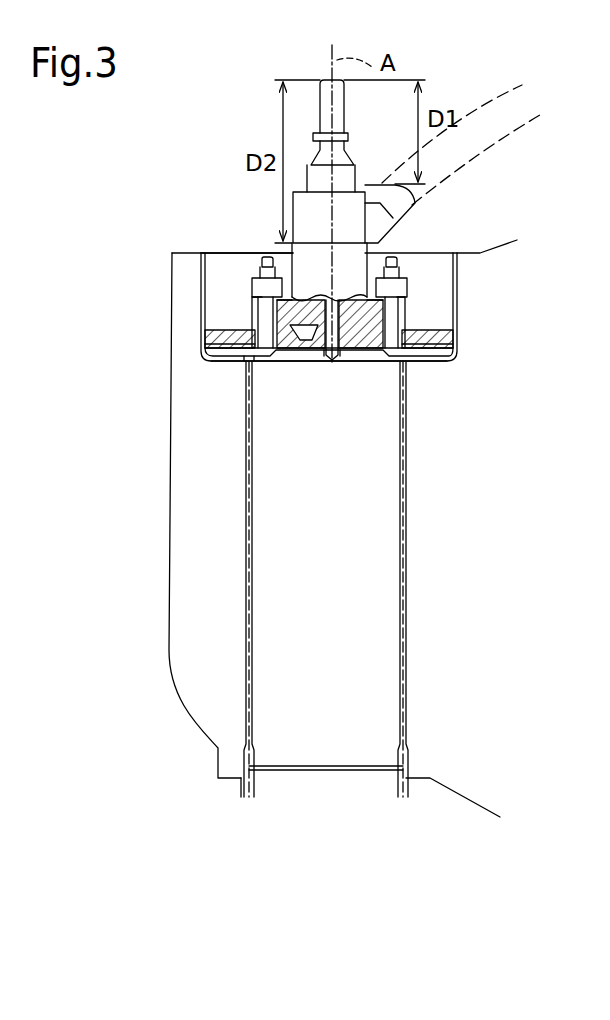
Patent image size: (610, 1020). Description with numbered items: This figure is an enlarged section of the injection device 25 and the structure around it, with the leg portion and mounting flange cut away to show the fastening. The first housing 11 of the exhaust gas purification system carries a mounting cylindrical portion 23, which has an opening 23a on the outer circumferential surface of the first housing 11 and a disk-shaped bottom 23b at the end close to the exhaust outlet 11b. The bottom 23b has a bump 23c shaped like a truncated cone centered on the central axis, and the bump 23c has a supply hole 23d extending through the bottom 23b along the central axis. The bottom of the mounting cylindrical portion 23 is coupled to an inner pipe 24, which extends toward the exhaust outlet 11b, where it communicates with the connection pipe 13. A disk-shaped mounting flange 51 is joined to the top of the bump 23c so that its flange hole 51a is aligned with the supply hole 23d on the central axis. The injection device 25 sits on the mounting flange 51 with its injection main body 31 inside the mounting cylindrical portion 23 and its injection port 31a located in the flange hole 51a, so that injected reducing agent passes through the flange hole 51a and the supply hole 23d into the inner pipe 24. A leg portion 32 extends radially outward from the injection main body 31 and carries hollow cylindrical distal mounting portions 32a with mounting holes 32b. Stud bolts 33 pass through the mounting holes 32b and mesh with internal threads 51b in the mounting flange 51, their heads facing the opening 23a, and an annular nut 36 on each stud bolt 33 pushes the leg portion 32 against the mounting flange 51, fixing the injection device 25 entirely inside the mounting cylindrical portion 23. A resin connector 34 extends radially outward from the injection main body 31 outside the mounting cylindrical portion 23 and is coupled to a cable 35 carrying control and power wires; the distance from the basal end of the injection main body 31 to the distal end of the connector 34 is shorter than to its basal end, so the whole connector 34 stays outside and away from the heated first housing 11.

The first housing 11 is at (512, 241).
The exhaust outlet 11b is at (405, 785).
The connection pipe 13 is at (252, 788).
The mounting cylindrical portion 23 is at (172, 258).
The opening 23a is at (203, 252).
The bottom 23b is at (203, 362).
The bump 23c is at (250, 364).
The supply hole 23d is at (335, 362).
The inner pipe 24 is at (407, 470).
The injection device 25 is at (248, 116).
The injection main body 31 is at (320, 90).
The injection port 31a is at (332, 362).
The leg portion 32 is at (336, 311).
The distal mounting portions 32a is at (207, 337).
The mounting holes 32b is at (250, 293).
The stud bolts 33 is at (264, 261).
The connector 34 is at (368, 186).
The cable 35 is at (470, 112).
The nut 36 is at (253, 281).
The mounting flange 51 is at (311, 353).
The flange hole 51a is at (308, 355).
The internal threads 51b is at (215, 356).